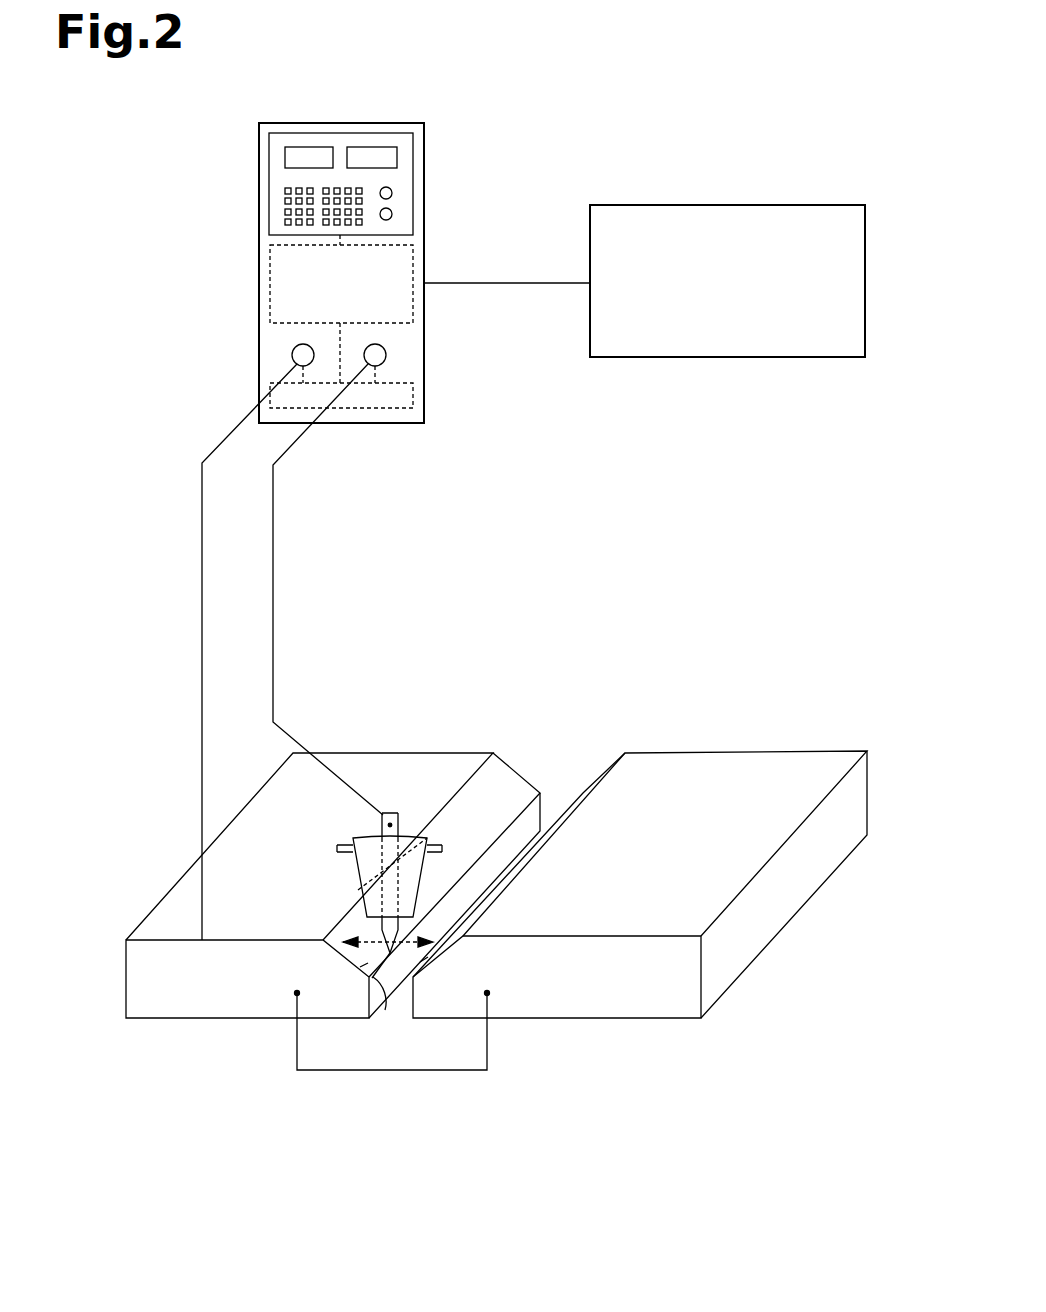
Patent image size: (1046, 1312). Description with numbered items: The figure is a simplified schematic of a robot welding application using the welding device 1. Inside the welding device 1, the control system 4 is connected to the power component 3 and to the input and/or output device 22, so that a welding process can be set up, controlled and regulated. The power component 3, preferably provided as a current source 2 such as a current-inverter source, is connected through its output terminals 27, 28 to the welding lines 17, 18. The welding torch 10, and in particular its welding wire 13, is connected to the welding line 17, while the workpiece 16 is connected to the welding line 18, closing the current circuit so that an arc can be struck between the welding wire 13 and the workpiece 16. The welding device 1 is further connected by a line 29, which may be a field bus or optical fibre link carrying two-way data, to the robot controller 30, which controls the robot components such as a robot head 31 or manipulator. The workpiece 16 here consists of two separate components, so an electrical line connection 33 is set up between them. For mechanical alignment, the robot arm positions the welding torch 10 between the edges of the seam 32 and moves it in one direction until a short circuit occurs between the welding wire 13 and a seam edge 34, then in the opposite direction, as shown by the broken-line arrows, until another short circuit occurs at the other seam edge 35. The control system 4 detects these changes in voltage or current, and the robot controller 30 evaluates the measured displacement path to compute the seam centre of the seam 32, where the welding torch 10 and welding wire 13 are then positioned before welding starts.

The welding device 1 is at (228, 163).
The current source 2 is at (200, 185).
The power component 3 is at (376, 398).
The control system 4 is at (282, 290).
The welding torch 10 is at (367, 862).
The welding wire 13 is at (390, 825).
The workpiece 16 is at (756, 680).
The welding line 17 is at (276, 513).
The welding line 18 is at (196, 535).
The input and/or output device 22 is at (345, 138).
The output terminal 27 is at (386, 354).
The output terminal 28 is at (292, 354).
The line 29 is at (488, 282).
The robot controller 30 is at (728, 235).
The robot head 31 is at (345, 843).
The seam 32 is at (558, 735).
The electrical line connection 33 is at (452, 1074).
The seam edge 34 is at (390, 953).
The seam edge 35 is at (390, 953).